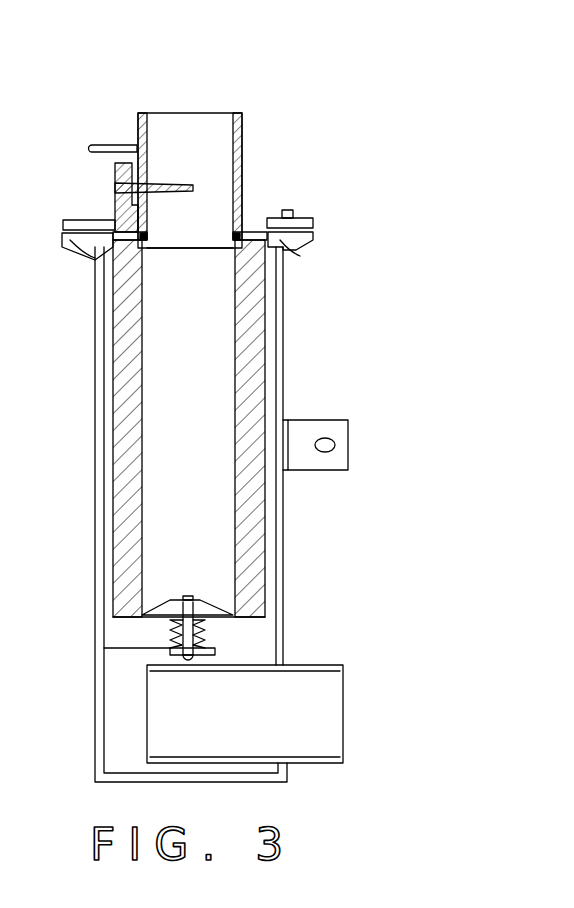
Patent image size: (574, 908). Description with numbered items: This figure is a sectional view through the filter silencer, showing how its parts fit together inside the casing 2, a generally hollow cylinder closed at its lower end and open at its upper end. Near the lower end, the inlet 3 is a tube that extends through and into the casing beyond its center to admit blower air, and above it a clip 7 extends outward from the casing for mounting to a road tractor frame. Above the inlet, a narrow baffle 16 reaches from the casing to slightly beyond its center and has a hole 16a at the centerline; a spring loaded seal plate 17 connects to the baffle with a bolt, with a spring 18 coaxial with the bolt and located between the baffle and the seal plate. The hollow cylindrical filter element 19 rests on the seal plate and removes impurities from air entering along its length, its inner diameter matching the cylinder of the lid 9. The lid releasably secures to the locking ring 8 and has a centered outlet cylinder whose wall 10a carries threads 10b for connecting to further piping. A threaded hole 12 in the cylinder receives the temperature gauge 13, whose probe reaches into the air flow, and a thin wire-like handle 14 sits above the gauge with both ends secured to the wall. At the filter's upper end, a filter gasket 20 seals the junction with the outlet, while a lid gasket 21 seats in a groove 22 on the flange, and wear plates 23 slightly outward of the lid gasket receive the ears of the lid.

The casing 2 is at (92, 352).
The inlet 3 is at (322, 717).
The clip 7 is at (307, 435).
The locking ring 8 is at (300, 220).
The lid 9 is at (185, 95).
The wall 10a is at (244, 130).
The threads 10b is at (242, 117).
The threaded hole 12 is at (117, 172).
The temperature gauge 13 is at (147, 190).
The handle 14 is at (103, 145).
The baffle 16 is at (125, 653).
The hole 16a is at (180, 655).
The seal plate 17 is at (210, 618).
The spring 18 is at (210, 632).
The filter element 19 is at (115, 463).
The filter gasket 20 is at (250, 228).
The lid gasket 21 is at (93, 260).
The groove 22 is at (280, 240).
The wear plates 23 is at (67, 250).